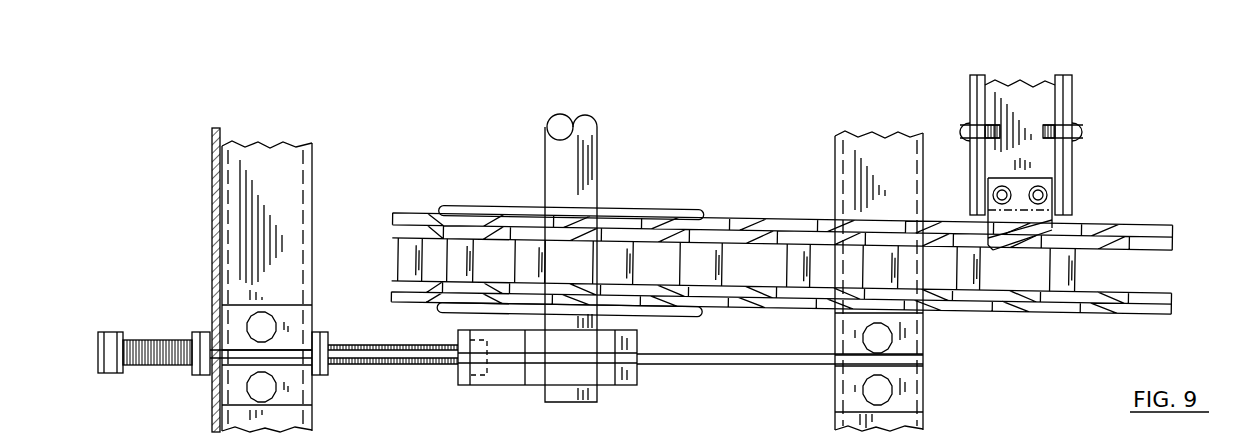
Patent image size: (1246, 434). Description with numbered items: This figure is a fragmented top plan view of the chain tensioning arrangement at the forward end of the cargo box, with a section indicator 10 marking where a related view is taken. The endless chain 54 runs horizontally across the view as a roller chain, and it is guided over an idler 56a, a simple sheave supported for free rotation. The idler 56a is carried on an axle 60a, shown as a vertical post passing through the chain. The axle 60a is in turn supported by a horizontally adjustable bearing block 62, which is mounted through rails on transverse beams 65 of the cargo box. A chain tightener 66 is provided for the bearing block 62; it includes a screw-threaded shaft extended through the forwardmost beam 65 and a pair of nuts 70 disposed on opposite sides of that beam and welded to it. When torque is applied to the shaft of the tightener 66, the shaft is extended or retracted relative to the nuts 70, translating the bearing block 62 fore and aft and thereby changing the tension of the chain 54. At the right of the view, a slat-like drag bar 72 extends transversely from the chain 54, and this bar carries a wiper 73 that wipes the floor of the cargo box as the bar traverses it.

The section view indicator 10 is at (1058, 70).
The endless chain 54 is at (1113, 228).
The idler 56a is at (668, 207).
The axle 60a is at (573, 150).
The bearing block 62 is at (632, 345).
The transverse beam 65 is at (856, 140).
The chain tightener 66 is at (157, 370).
The nut 70 is at (190, 338).
The drag bar 72 is at (1047, 124).
The wiper 73 is at (975, 153).